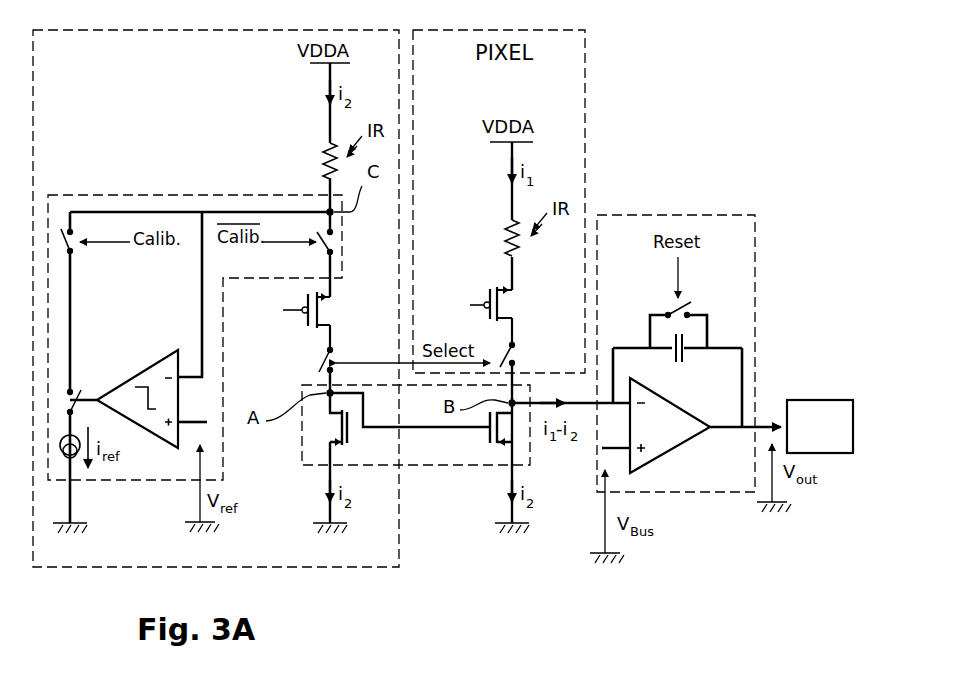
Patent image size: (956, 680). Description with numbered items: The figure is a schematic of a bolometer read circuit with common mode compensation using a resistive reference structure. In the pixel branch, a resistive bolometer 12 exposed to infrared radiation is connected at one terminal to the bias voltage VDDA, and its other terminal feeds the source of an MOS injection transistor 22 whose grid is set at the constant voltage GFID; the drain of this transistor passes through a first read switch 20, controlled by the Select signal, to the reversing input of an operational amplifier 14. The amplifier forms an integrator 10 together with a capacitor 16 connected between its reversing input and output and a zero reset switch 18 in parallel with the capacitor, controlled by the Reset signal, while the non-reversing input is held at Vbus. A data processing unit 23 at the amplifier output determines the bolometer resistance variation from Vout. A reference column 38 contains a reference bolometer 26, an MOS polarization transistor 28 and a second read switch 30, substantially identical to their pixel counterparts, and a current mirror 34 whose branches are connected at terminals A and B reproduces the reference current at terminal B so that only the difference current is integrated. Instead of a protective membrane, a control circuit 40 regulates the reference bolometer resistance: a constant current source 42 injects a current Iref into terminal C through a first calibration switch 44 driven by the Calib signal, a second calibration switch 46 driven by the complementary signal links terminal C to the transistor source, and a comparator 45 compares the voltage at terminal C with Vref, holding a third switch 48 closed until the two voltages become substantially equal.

The integrator 10 is at (757, 313).
The resistive bolometer 12 is at (502, 236).
The operational amplifier 14 is at (677, 451).
The capacitor 16 is at (684, 356).
The zero reset switch 18 is at (693, 306).
The first read switch 20 is at (515, 357).
The MOS injection transistor 22 is at (510, 303).
The data processing unit 23 is at (820, 426).
The reference bolometer 26 is at (318, 160).
The MOS polarization transistor 28 is at (327, 312).
The second read switch 30 is at (322, 358).
The current mirror 34 is at (443, 466).
The reference column 38 is at (338, 568).
The control circuit 40 is at (185, 195).
The constant current source 42 is at (72, 460).
The first calibration switch 44 is at (67, 240).
The comparator 45 is at (130, 398).
The second calibration switch 46 is at (334, 239).
The third switch 48 is at (70, 393).